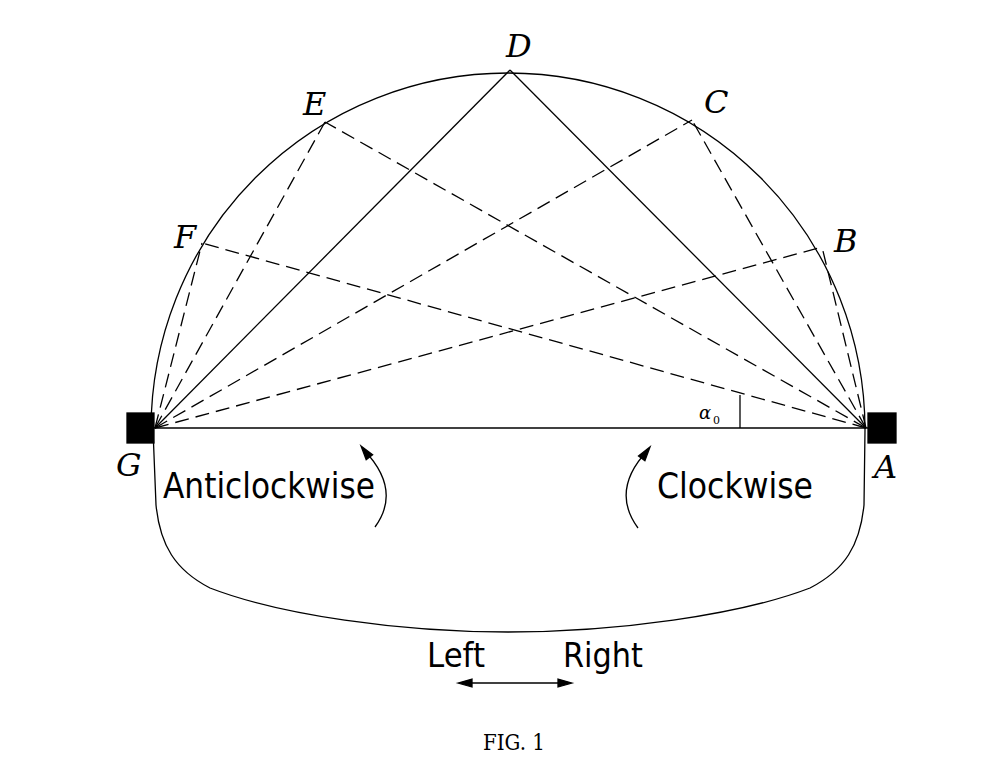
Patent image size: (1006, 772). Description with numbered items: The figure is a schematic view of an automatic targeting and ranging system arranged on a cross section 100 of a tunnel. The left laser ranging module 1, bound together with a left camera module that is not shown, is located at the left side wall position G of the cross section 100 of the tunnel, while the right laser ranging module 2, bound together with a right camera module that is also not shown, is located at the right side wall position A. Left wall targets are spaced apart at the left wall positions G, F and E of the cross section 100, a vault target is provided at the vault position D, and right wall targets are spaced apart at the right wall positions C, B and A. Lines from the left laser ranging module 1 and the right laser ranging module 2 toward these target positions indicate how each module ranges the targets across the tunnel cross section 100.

The left laser ranging module 1 is at (130, 412).
The right laser ranging module 2 is at (893, 412).
The cross section of tunnel 100 is at (163, 533).